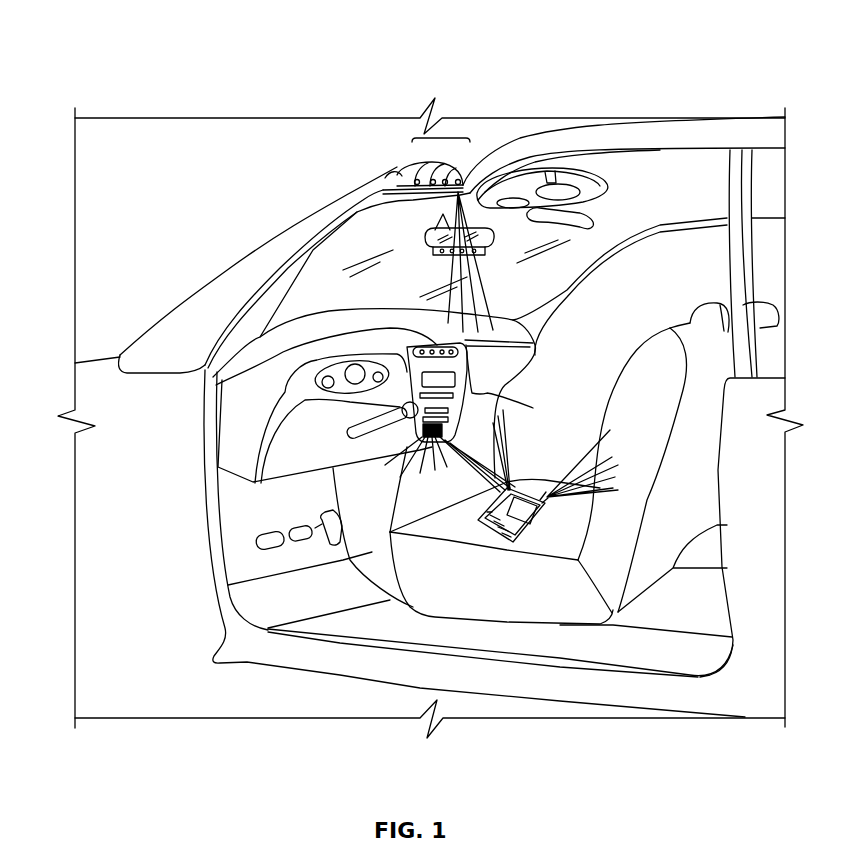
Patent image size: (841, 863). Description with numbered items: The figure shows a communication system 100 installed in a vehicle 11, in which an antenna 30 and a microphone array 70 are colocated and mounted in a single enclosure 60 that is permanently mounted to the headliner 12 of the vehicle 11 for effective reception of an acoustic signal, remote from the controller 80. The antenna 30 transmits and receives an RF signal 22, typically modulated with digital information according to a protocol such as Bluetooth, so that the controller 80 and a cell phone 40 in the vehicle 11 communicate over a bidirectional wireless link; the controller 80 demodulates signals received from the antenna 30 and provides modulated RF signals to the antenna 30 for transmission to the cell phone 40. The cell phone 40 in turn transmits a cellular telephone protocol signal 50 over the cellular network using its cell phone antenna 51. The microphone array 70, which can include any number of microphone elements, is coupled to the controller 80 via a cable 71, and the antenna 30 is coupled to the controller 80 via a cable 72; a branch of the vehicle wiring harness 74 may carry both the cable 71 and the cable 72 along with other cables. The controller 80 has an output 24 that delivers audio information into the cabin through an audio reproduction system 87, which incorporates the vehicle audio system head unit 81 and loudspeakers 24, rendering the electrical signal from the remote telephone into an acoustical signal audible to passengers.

The communication system 100 is at (122, 44).
The vehicle 11 is at (92, 360).
The headliner 12 is at (735, 140).
The RF signal 22 is at (470, 274).
The output 24 is at (437, 445).
The antenna 30 is at (465, 177).
The cell phone 40 is at (527, 542).
The cellular telephone protocol signal 50 is at (602, 490).
The cell phone antenna 51 is at (547, 500).
The enclosure 60 is at (471, 188).
The microphone array 70 is at (440, 136).
The cable 71 is at (413, 165).
The cable 72 is at (392, 176).
The wiring harness 74 is at (273, 282).
The controller 80 is at (435, 438).
The head unit 81 is at (410, 377).
The audio reproduction system 87 is at (507, 400).